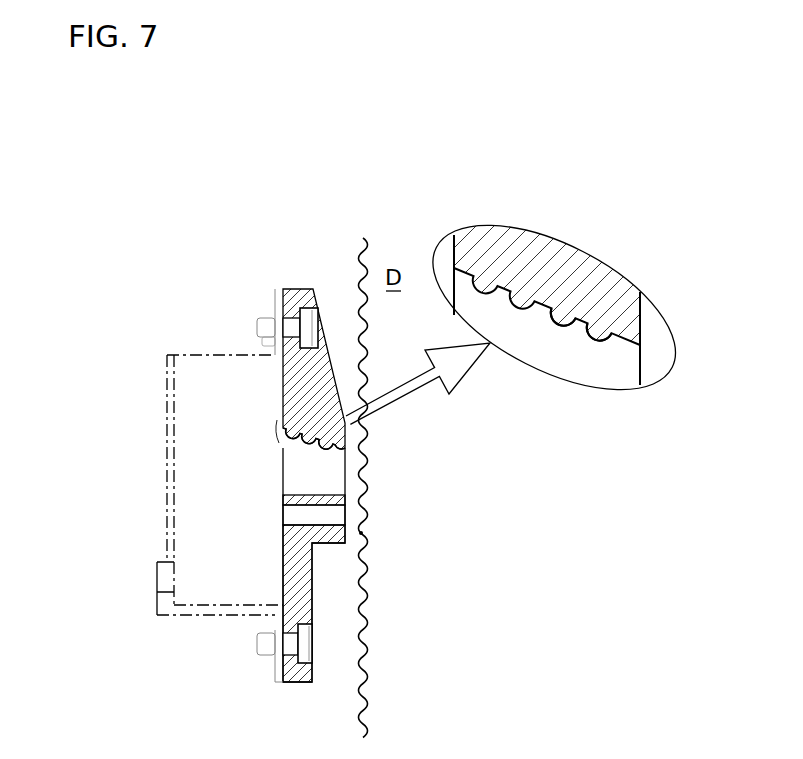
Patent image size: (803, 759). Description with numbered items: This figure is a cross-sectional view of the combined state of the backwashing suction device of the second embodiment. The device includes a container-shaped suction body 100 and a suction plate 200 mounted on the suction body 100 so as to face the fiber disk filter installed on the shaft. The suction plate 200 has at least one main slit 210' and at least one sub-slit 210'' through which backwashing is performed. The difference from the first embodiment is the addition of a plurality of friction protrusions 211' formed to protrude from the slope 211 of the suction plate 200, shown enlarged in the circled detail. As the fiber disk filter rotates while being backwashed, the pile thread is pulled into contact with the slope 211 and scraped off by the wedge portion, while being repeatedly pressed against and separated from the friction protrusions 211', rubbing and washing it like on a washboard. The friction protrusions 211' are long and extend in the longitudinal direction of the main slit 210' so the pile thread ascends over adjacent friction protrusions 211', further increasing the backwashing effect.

The suction body 100 is at (170, 471).
The suction plate 200 is at (292, 377).
The slope 211 is at (368, 358).
The main slit 210' is at (330, 413).
The friction protrusions 211' is at (588, 373).
The sub-slit 210'' is at (216, 520).